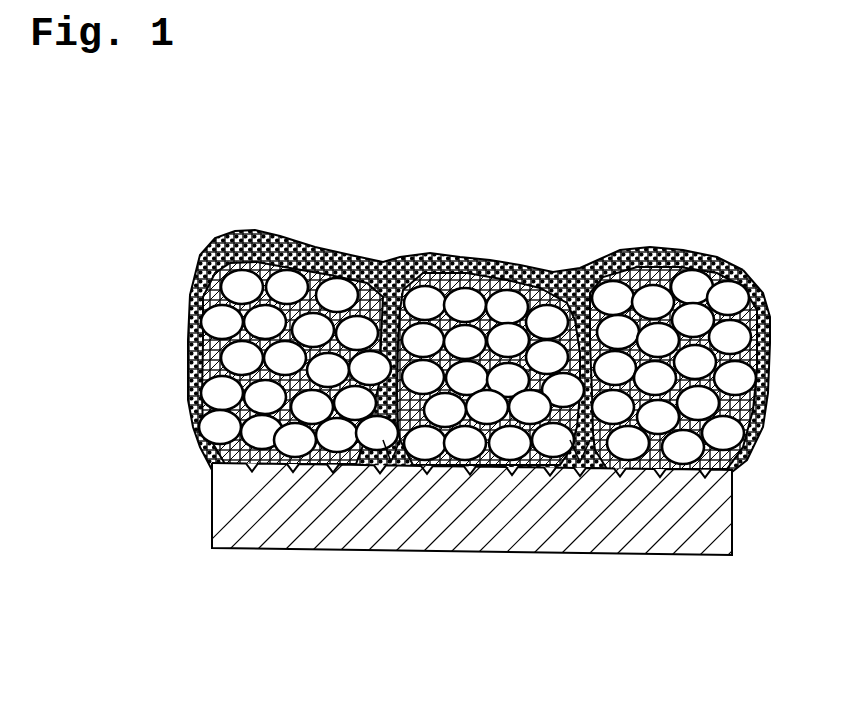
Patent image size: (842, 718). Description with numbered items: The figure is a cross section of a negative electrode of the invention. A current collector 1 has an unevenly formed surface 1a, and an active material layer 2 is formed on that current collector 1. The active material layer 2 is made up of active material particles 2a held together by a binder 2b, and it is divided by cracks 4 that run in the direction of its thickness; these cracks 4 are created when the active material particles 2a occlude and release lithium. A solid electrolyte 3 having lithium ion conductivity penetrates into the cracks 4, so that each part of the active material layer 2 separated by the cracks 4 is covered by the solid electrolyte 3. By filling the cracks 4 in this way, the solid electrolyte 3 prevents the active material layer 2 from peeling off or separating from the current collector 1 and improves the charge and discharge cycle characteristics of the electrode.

The current collector 1 is at (512, 539).
The surface 1a is at (708, 467).
The active material layer 2 is at (520, 315).
The active material particles 2a is at (753, 277).
The binder 2b is at (772, 330).
The solid electrolyte 3 is at (515, 308).
The cracks 4 is at (395, 287).